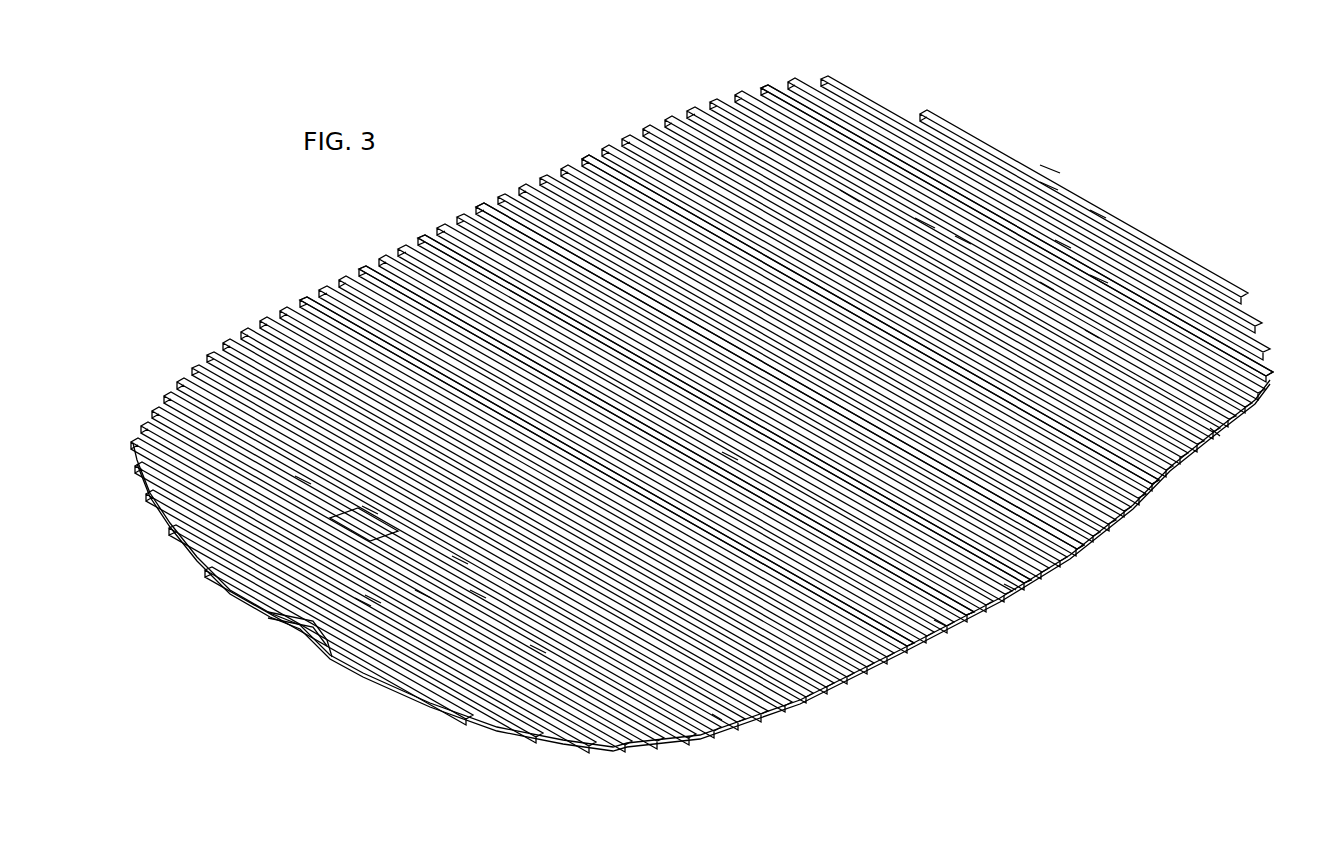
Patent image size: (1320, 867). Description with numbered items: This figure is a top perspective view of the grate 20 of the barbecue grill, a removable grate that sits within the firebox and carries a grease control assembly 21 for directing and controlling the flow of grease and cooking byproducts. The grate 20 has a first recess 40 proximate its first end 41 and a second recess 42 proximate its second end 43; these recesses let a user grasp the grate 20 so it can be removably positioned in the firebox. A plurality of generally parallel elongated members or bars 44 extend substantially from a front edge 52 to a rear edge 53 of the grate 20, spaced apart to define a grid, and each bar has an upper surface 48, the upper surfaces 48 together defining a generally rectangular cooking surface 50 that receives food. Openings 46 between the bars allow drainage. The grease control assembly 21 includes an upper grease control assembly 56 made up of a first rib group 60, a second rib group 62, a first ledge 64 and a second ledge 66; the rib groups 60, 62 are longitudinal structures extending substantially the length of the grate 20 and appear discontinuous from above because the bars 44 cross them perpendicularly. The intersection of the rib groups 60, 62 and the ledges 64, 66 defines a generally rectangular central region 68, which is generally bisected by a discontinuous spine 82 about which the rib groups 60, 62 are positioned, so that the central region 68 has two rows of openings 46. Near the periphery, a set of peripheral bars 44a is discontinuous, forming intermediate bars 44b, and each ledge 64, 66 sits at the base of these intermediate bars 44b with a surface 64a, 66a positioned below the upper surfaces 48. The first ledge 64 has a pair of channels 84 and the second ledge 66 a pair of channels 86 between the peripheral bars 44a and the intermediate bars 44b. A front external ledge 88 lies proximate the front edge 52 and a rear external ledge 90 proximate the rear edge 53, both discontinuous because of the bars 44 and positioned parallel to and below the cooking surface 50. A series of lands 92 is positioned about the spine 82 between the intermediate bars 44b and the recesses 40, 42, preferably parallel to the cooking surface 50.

The grate 20 is at (1047, 75).
The grease control assembly 21 is at (1101, 330).
The first recess 40 is at (310, 632).
The first end 41 is at (285, 620).
The second recess 42 is at (1090, 210).
The second end 43 is at (1050, 168).
The elongated member 44 is at (482, 205).
The peripheral elongated bar 44a is at (1220, 430).
The intermediate bar 44b is at (960, 237).
The opening 46 is at (301, 354).
The upper surface 48 is at (422, 236).
The cooking surface 50 is at (768, 84).
The front edge 52 is at (940, 623).
The rear edge 53 is at (362, 269).
The upper grease control assembly 56 is at (850, 194).
The first rib group 60 is at (303, 480).
The second rib group 62 is at (537, 647).
The first ledge 64 is at (477, 593).
The ledge surface 64a is at (357, 540).
The second ledge 66 is at (1055, 282).
The ledge surface 66a is at (925, 222).
The central region 68 is at (730, 455).
The spine 82 is at (362, 602).
The channel 84 is at (370, 510).
The channel 86 is at (1048, 190).
The front external ledge 88 is at (1010, 586).
The rear external ledge 90 is at (588, 158).
The land 92 is at (1060, 243).